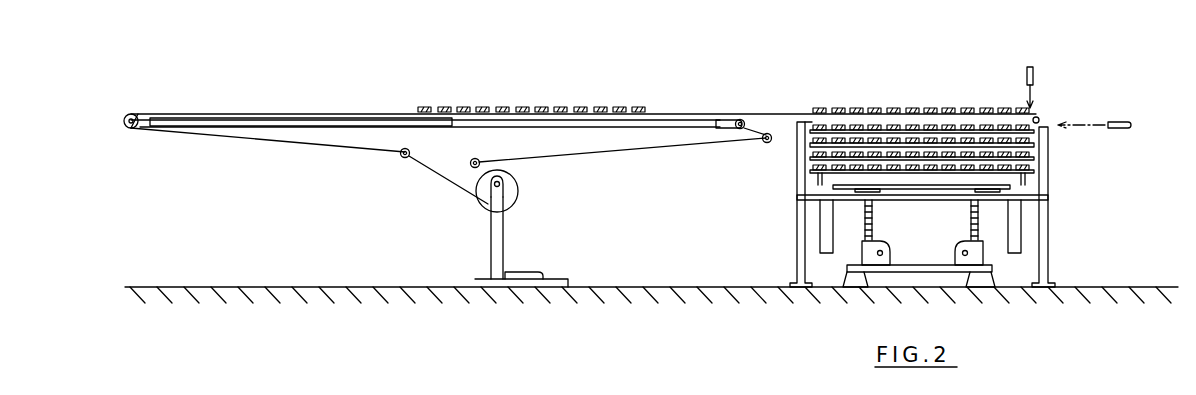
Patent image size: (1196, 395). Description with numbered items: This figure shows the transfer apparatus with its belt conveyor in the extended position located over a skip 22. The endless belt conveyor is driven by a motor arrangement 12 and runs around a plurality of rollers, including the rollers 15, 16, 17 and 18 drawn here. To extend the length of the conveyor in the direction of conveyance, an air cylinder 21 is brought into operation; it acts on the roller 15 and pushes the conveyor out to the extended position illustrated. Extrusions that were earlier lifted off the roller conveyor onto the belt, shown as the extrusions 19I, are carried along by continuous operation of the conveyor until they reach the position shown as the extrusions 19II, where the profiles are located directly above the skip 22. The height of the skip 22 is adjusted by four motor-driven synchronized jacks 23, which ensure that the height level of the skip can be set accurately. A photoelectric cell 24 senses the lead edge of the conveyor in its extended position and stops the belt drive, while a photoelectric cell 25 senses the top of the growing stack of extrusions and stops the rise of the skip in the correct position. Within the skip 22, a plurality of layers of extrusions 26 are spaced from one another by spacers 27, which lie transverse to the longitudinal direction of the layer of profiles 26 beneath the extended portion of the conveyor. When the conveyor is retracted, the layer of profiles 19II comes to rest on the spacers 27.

The motor arrangement 12 is at (518, 188).
The roller 15 is at (763, 95).
The roller 16 is at (770, 143).
The roller 17 is at (471, 160).
The roller 18 is at (401, 157).
The extrusions in lifted position 19I is at (540, 108).
The extrusions in extended position 19II is at (905, 110).
The air cylinder 21 is at (356, 129).
The skip 22 is at (920, 181).
The motor-driven synchronized jacks 23 is at (866, 220).
The photoelectric cell 24 is at (1026, 76).
The photoelectric cell 25 is at (1120, 120).
The layers of extrusions 26 is at (1033, 156).
The spacers 27 is at (1037, 146).